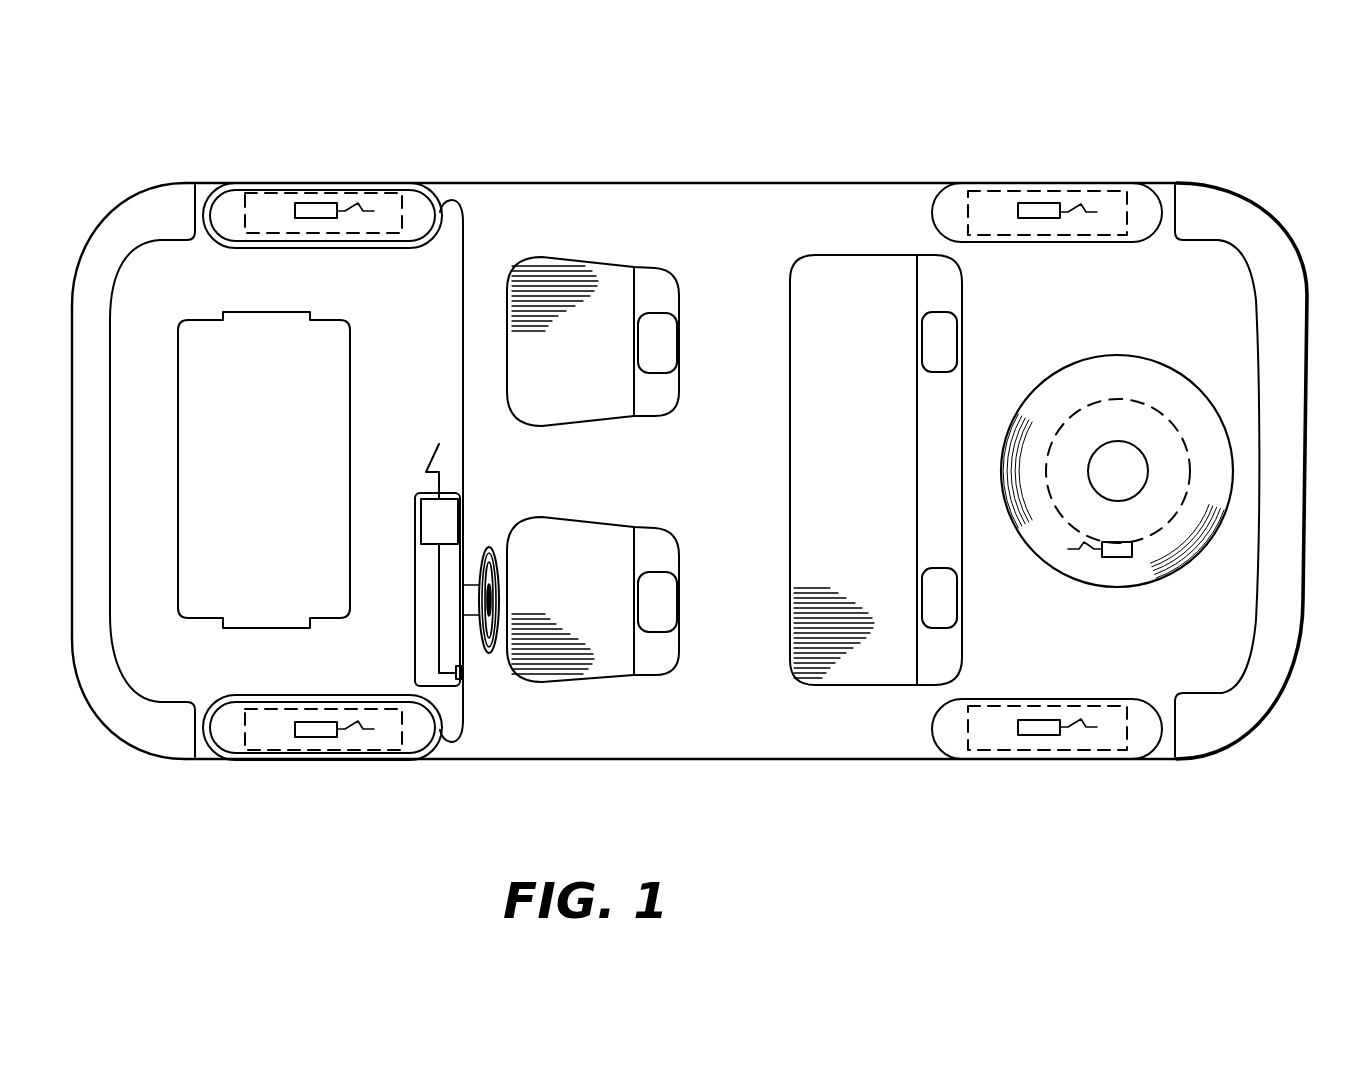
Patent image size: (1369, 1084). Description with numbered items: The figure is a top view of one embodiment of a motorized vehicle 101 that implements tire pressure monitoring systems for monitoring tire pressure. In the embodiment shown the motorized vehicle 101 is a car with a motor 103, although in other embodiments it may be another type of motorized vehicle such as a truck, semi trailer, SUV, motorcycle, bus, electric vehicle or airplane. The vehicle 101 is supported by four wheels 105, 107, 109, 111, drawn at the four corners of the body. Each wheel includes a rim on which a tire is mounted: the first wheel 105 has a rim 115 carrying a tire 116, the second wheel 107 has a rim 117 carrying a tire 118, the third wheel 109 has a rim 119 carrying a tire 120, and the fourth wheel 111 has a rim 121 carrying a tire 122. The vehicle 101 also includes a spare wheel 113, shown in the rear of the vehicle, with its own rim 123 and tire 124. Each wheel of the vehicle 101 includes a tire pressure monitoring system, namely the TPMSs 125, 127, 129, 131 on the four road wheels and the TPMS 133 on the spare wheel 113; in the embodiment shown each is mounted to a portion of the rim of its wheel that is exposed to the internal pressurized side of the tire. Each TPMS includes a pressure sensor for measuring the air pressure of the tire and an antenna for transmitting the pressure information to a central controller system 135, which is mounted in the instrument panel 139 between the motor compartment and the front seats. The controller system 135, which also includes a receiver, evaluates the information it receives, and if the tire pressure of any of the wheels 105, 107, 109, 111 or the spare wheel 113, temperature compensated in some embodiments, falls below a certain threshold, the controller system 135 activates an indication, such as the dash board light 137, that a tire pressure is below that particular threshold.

The motorized vehicle 101 is at (1268, 118).
The motor 103 is at (352, 372).
The wheel 105 is at (330, 188).
The wheel 107 is at (310, 755).
The wheel 109 is at (1061, 186).
The wheel 111 is at (1045, 757).
The spare wheel 113 is at (1125, 476).
The rim 115 is at (370, 190).
The tire 116 is at (418, 195).
The rim 117 is at (345, 751).
The tire 118 is at (414, 746).
The rim 119 is at (1099, 191).
The tire 120 is at (1143, 196).
The rim 121 is at (1072, 750).
The tire 122 is at (1136, 745).
The rim 123 is at (1153, 531).
The tire 124 is at (1205, 522).
The tire pressure monitoring system 125 is at (316, 203).
The tire pressure monitoring system 127 is at (307, 738).
The tire pressure monitoring system 129 is at (1040, 203).
The tire pressure monitoring system 131 is at (1037, 737).
The tire pressure monitoring system 133 is at (1113, 558).
The central controller system 135 is at (421, 530).
The dash board light 137 is at (464, 676).
The instrument panel 139 is at (450, 579).